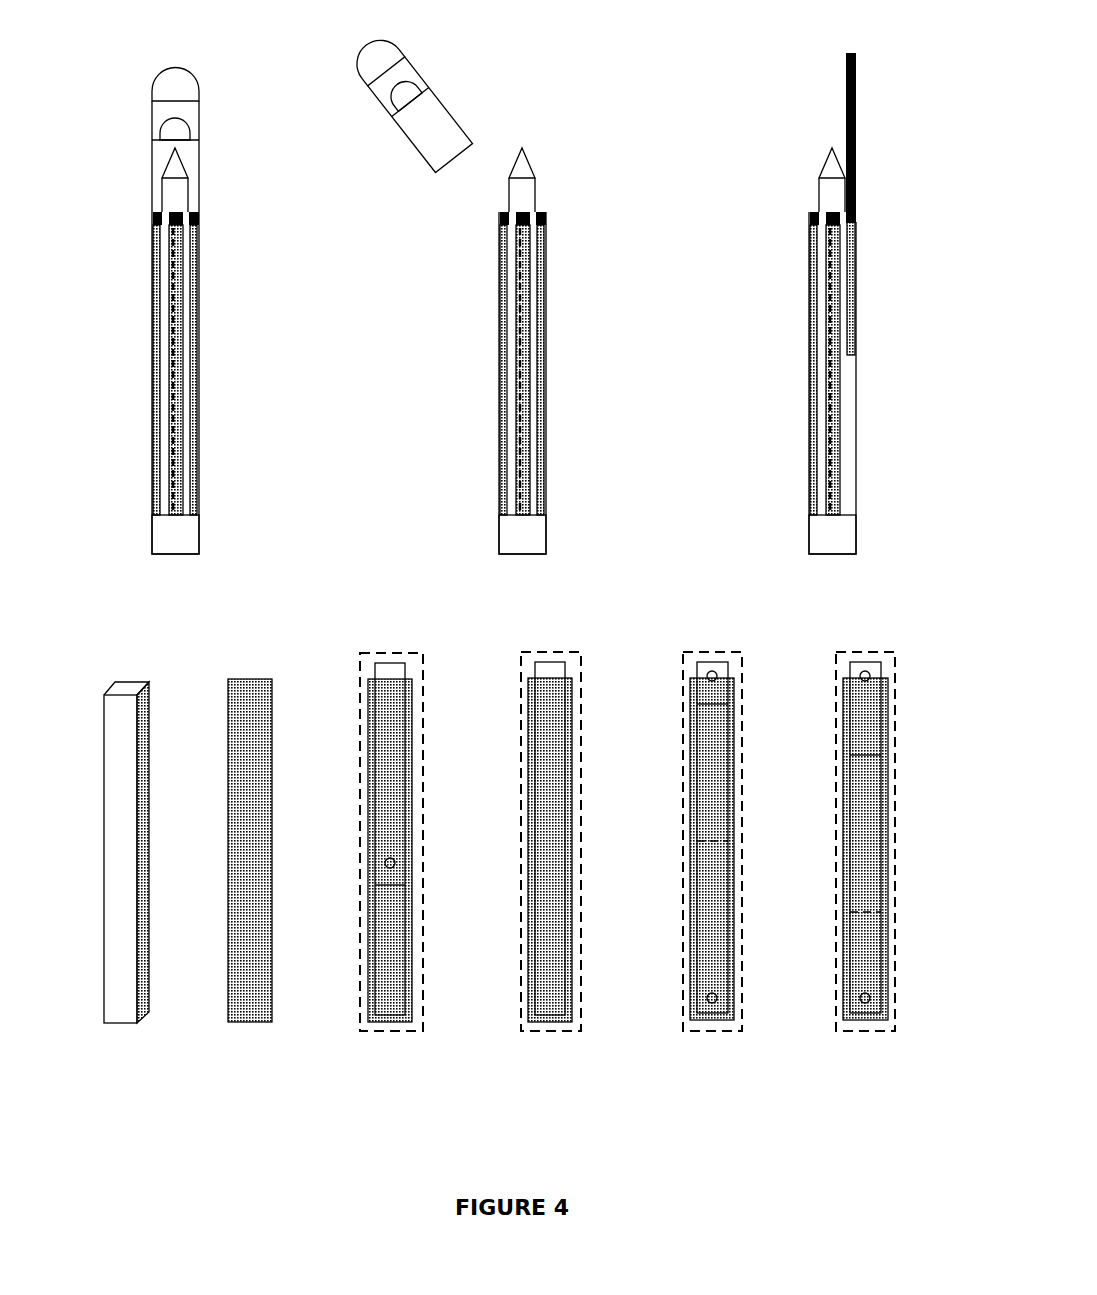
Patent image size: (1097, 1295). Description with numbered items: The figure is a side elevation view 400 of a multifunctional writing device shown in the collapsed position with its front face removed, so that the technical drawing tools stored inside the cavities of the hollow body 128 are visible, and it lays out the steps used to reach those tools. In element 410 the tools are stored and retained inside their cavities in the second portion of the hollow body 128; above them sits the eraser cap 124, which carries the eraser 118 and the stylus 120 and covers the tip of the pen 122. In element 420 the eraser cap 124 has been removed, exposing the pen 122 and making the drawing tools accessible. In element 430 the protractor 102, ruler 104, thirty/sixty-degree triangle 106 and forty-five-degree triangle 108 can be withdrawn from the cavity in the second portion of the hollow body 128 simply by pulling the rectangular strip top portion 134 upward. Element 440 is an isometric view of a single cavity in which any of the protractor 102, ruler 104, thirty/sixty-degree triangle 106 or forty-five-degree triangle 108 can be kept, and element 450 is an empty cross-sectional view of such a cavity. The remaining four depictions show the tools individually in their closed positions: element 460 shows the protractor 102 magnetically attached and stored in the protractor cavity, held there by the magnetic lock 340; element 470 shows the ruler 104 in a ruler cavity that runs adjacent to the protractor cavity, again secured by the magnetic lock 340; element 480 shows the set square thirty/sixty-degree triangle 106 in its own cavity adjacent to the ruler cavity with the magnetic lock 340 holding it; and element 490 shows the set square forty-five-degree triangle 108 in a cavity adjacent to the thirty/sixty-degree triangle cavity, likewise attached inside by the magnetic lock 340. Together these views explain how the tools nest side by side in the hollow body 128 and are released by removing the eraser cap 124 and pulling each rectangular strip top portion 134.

The protractor 102 is at (154, 262).
The ruler 104 is at (178, 311).
The set square thirty/sixty-degree triangle 106 is at (199, 351).
The set square forty-five-degree triangle 108 is at (173, 388).
The eraser 118 is at (191, 68).
The stylus 120 is at (188, 130).
The pen 122 is at (183, 164).
The eraser cap 124 is at (201, 191).
The hollow body 128 is at (201, 530).
The rectangular strip top portion 134 is at (200, 224).
The magnetic lock 340 is at (427, 684).
The side elevation view 400 is at (124, 1130).
The element showing tools stored in cavities 410 is at (193, 590).
The element showing eraser cap removed 420 is at (539, 590).
The element showing tool removal 430 is at (853, 590).
The isometric view of a cavity 440 is at (145, 1075).
The empty cross sectional view of a cavity 450 is at (268, 1075).
The element showing stored protractor 460 is at (407, 1075).
The element showing stored ruler 470 is at (570, 1075).
The element showing stored thirty/sixty-degree triangle 480 is at (732, 1075).
The element showing stored forty-five-degree triangle 490 is at (887, 1075).